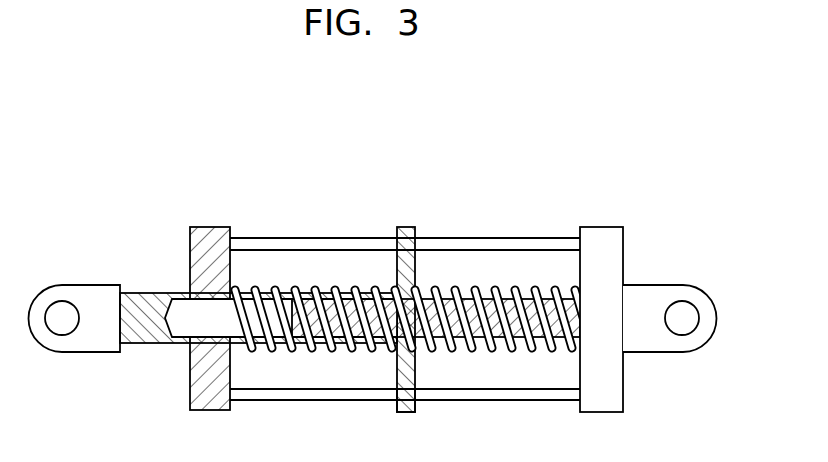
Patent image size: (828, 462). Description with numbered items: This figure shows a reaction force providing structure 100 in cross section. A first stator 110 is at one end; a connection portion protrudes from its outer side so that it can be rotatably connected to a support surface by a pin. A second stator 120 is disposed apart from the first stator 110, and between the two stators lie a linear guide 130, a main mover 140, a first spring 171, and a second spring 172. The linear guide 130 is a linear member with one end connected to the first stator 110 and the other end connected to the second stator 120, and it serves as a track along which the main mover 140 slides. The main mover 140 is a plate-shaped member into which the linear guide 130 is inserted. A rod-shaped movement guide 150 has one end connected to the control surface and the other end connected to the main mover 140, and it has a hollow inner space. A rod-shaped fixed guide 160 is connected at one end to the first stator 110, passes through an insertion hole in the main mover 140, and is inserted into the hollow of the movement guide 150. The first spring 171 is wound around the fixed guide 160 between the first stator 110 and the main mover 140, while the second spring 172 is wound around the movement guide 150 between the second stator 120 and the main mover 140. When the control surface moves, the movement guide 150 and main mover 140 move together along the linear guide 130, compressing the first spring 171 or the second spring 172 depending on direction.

The reaction force providing structure 100 is at (72, 127).
The first stator 110 is at (604, 234).
The second stator 120 is at (209, 229).
The linear guide 130 is at (551, 240).
The main mover 140 is at (406, 227).
The movement guide 150 is at (146, 292).
The fixed guide 160 is at (397, 389).
The first spring 171 is at (498, 288).
The second spring 172 is at (317, 288).